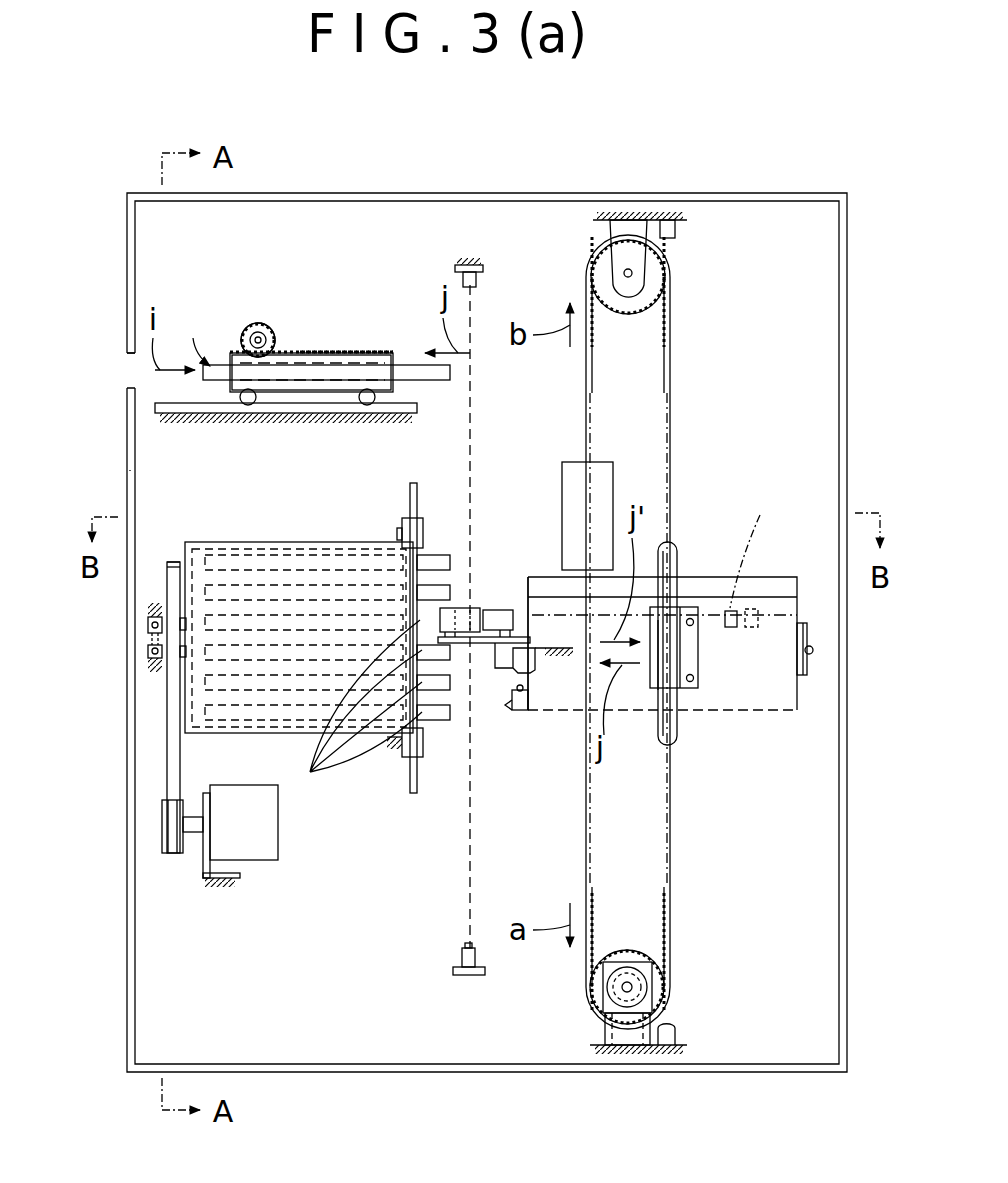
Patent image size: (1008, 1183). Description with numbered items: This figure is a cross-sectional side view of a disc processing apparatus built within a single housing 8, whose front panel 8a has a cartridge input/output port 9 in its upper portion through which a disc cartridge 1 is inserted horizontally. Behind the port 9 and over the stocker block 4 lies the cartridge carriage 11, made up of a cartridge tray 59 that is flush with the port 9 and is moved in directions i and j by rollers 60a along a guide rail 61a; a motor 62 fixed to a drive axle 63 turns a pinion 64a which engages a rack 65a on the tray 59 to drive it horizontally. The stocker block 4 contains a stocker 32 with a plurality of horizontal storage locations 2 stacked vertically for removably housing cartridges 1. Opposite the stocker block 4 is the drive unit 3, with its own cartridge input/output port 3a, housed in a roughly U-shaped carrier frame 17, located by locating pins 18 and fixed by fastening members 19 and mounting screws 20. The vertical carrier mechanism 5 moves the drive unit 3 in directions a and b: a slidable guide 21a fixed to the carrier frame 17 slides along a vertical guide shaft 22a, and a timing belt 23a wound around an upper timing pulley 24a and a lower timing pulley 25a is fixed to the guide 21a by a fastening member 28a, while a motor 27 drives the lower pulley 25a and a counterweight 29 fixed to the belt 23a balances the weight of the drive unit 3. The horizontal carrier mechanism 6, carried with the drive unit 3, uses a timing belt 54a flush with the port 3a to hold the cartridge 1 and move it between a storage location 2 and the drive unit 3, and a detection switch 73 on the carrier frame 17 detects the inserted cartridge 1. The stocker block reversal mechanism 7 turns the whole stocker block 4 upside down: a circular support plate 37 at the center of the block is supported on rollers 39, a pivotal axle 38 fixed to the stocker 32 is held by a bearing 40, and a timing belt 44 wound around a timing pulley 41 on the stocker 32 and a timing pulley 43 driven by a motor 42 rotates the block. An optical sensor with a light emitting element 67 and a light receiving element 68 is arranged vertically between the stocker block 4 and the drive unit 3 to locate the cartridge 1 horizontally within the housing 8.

The disc cartridge 1 is at (480, 543).
The horizontal storage locations 2 is at (340, 592).
The drive unit 3 is at (772, 580).
The cartridge input/output port of the drive unit 3a is at (528, 580).
The stocker block 4 is at (299, 602).
The vertical carrier mechanism 5 is at (681, 633).
The horizontal carrier mechanism 6 is at (483, 657).
The stocker block reversal mechanism 7 is at (210, 757).
The housing 8 is at (124, 212).
The front panel 8a is at (128, 470).
The cartridge input/output port 9 is at (124, 362).
The cartridge carriage 11 is at (305, 343).
The carrier frame 17 is at (728, 610).
The locating pins 18 is at (515, 708).
The fastening members 19 is at (808, 630).
The mounting screws 20 is at (813, 652).
The slidable guide 21a is at (700, 665).
The vertical guide shaft 22a is at (678, 232).
The timing belt 23a is at (678, 322).
The upper timing pulley 24a is at (657, 272).
The lower timing pulley 25a is at (652, 950).
The motor 27 is at (650, 982).
The fastening member 28a is at (660, 668).
The counterweight 29 is at (564, 462).
The stocker 32 is at (232, 542).
The circular support plate 37 is at (418, 486).
The pivotal axle 38 is at (148, 652).
The rollers 39 is at (424, 530).
The bearing 40 is at (148, 624).
The timing pulley 41 is at (167, 580).
The motor 42 is at (268, 838).
The timing pulley 43 is at (162, 822).
The timing belt 44 is at (167, 770).
The timing belt 54a is at (480, 617).
The cartridge tray 59 is at (322, 368).
The rollers 60a is at (248, 405).
The guide rail 61a is at (185, 413).
The motor 62 is at (258, 323).
The drive axle 63 is at (264, 334).
The pinion 64a is at (243, 338).
The rack 65a is at (363, 350).
The light emitting element 67 is at (453, 968).
The light receiving element 68 is at (484, 276).
The detection switch 73 is at (752, 630).